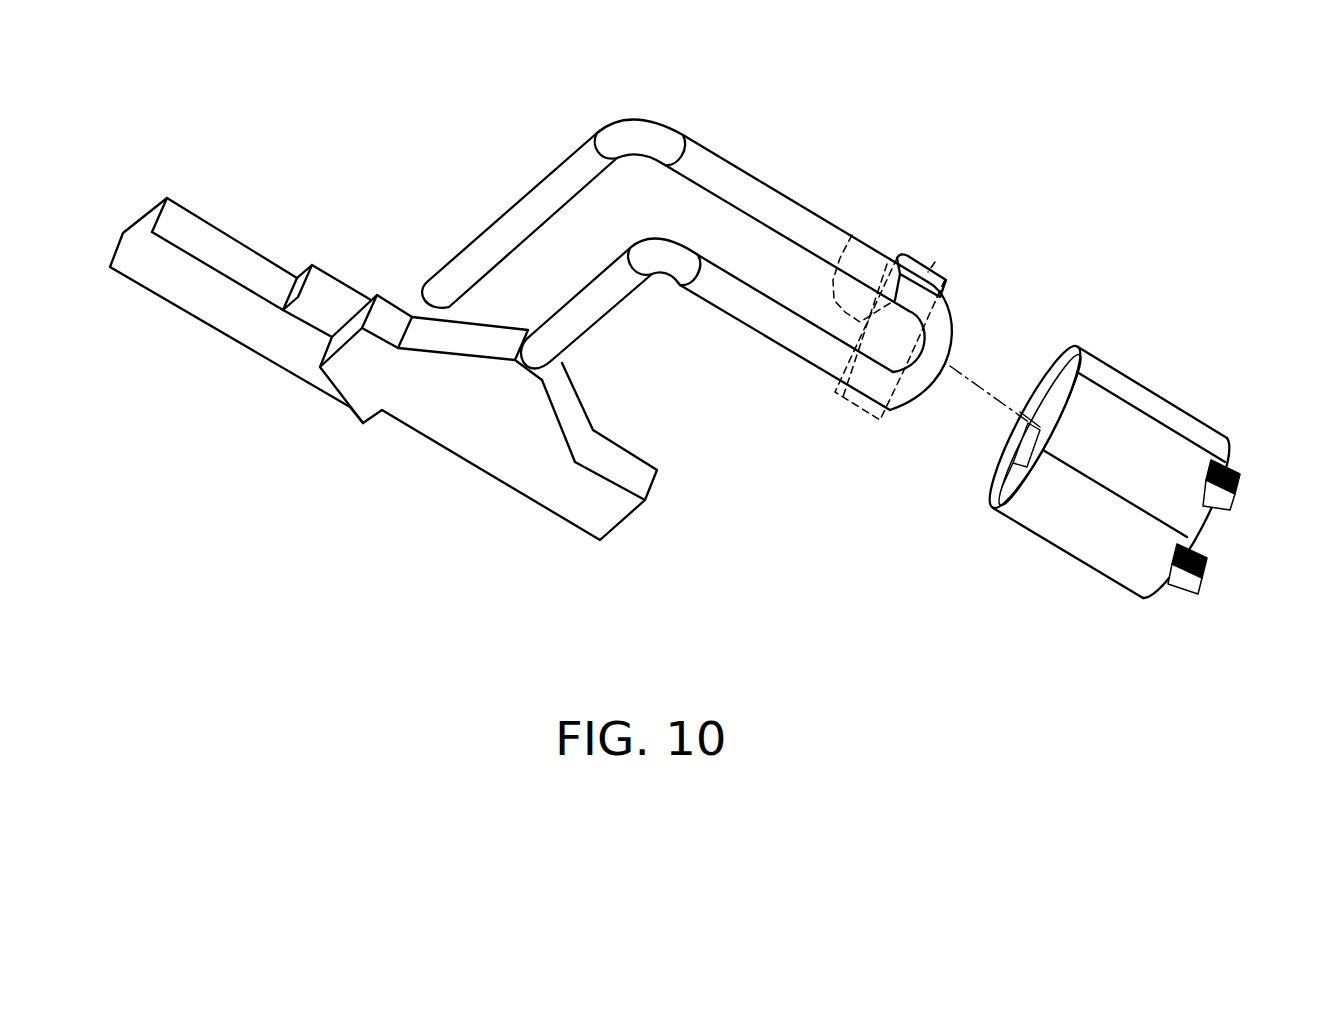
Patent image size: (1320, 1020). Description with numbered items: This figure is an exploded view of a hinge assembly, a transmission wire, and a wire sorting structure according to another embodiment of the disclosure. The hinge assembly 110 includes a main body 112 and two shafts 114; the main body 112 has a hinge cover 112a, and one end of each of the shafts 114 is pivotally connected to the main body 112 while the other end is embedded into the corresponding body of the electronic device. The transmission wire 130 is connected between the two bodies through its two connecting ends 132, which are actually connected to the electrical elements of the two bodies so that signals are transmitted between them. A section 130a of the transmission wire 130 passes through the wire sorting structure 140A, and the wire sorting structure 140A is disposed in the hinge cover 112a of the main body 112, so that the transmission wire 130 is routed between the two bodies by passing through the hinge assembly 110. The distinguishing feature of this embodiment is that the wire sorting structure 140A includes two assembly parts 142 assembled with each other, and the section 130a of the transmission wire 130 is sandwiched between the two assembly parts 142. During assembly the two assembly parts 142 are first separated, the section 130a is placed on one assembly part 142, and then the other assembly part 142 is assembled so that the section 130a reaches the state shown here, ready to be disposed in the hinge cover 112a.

The hinge assembly 110 is at (1124, 443).
The main body 112 is at (1115, 430).
The hinge cover 112a is at (1151, 375).
The shafts 114 is at (1237, 500).
The transmission wire 130 is at (543, 187).
The section 130a is at (970, 315).
The connecting ends 132 is at (457, 432).
The wire sorting structure 140A is at (958, 164).
The assembly parts 142 is at (935, 262).